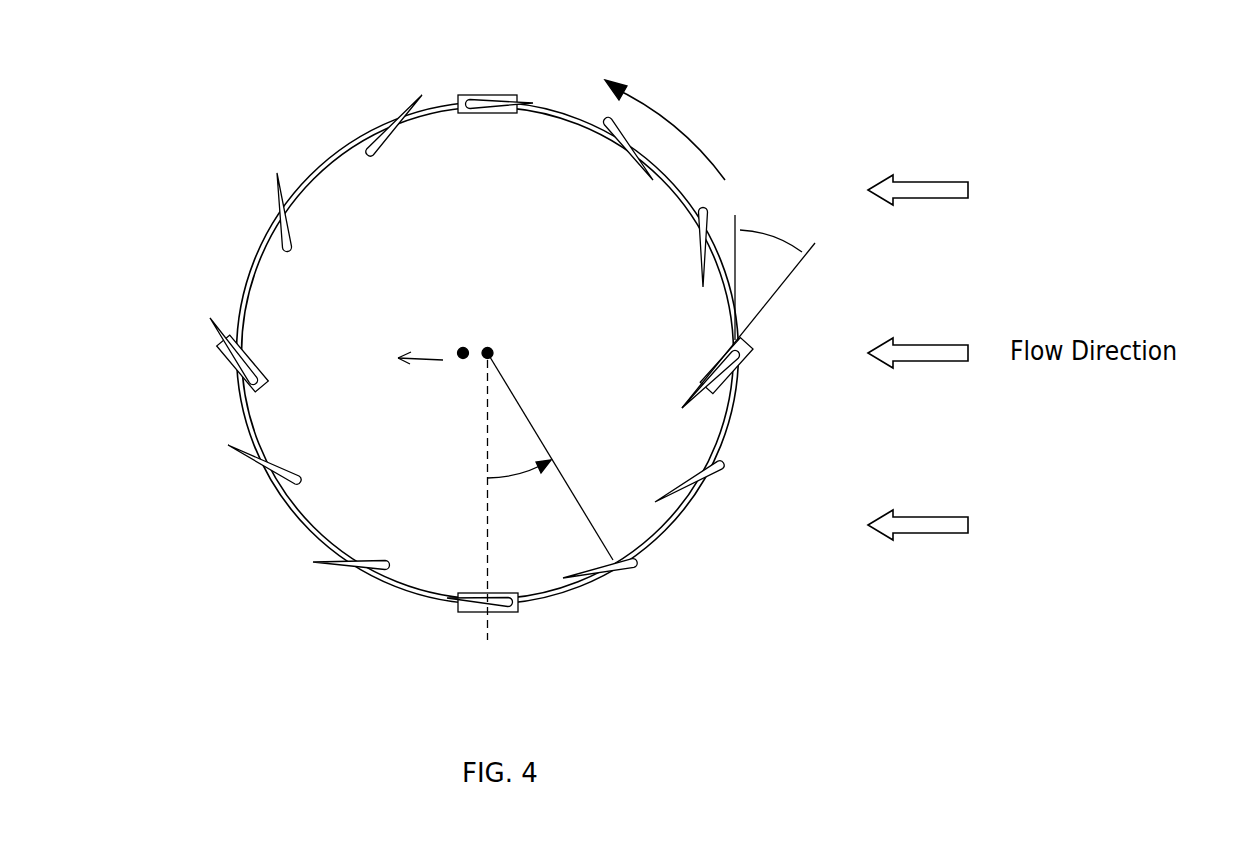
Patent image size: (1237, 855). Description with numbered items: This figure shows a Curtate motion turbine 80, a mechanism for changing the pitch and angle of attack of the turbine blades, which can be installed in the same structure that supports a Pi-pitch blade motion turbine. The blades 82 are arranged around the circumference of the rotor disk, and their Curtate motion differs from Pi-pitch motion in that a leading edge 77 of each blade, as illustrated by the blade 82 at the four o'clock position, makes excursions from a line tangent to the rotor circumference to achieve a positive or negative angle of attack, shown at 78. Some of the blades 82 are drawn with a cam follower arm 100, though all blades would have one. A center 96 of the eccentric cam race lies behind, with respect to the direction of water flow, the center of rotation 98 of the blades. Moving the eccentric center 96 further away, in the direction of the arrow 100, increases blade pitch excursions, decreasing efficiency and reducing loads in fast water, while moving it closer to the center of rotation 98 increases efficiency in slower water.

The Curtate motion turbine 80 is at (330, 82).
The blades 82 is at (275, 180).
The cam follower arm 100 is at (462, 95).
The center of rotation 98 is at (493, 350).
The center of the eccentric cam race 96 is at (457, 360).
The angle of attack 78 is at (770, 298).
The leading edge 77 is at (710, 468).